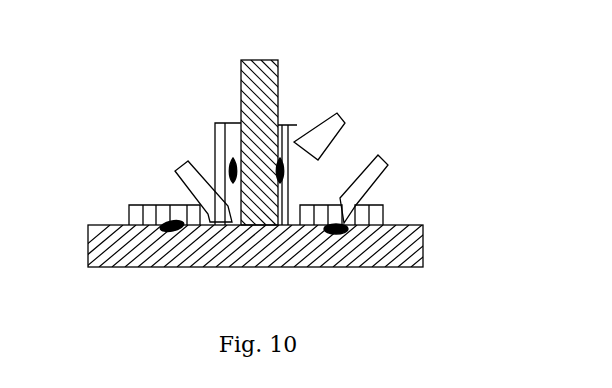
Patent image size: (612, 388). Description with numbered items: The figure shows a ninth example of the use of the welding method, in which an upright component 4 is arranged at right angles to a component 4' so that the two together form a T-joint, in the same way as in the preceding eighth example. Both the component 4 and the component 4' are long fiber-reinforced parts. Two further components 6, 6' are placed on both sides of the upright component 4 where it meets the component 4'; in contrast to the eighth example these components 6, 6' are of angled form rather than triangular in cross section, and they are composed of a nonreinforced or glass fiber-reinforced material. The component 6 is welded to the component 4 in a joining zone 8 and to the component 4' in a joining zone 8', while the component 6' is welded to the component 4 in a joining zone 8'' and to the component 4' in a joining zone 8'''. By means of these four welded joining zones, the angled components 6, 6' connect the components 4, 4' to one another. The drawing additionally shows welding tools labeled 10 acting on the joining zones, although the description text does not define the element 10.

The component 4 is at (258, 139).
The component 4' is at (260, 263).
The component 6 is at (147, 193).
The component 6' is at (382, 203).
The joining zone 8 is at (223, 141).
The joining zone 8' is at (158, 265).
The joining zone 8'' is at (315, 175).
The joining zone 8''' is at (353, 265).
The welding tool 10 is at (187, 168).